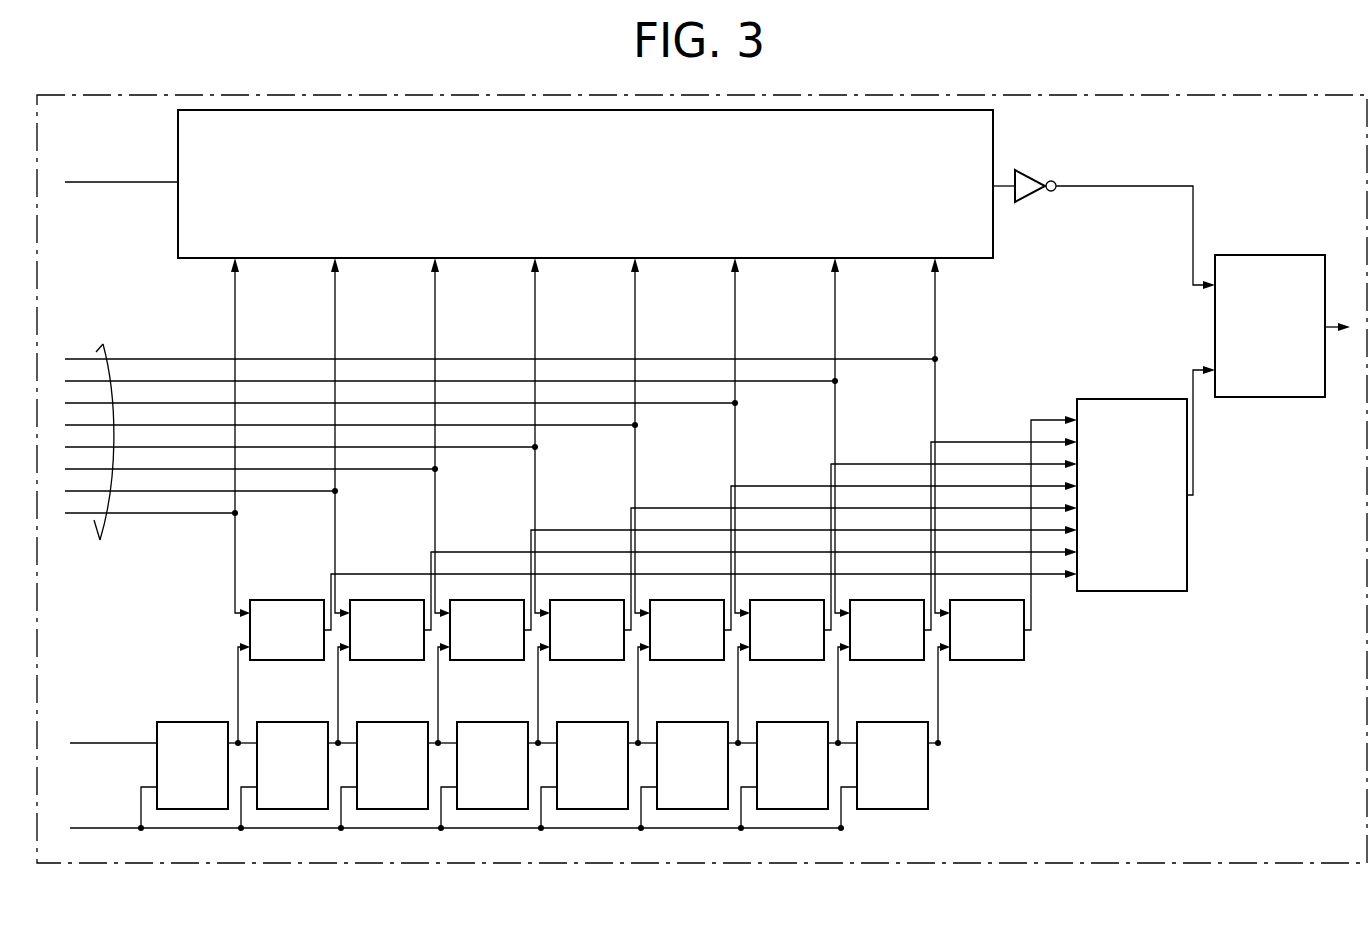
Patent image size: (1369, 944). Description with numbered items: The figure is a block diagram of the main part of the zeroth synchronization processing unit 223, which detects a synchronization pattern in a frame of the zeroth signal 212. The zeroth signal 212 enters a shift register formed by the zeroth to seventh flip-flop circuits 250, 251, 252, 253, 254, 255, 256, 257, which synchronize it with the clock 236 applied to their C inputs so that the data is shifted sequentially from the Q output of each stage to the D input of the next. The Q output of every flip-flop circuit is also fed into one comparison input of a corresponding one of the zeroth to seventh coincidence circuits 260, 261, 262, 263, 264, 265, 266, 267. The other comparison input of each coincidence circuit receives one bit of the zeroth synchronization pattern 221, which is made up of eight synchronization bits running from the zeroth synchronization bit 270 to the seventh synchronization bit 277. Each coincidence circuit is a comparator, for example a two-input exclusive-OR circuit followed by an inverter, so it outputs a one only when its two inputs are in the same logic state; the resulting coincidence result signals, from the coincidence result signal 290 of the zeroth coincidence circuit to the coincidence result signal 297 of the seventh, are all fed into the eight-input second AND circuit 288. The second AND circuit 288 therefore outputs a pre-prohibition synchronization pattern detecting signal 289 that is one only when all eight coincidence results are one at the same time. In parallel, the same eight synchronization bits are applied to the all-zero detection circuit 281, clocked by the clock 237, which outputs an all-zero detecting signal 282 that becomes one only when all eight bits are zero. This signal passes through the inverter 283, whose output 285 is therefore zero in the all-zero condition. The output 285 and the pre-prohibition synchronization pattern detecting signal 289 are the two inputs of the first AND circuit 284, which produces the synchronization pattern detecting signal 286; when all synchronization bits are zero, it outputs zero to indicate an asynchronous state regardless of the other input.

The zeroth synchronization processing unit 223 is at (1215, 98).
The clock 237 is at (88, 181).
The zeroth synchronization pattern 221 is at (105, 342).
The seventh synchronization bit 277 is at (165, 358).
The zeroth synchronization bit 270 is at (158, 514).
The zeroth signal 212 is at (105, 743).
The clock 236 is at (97, 828).
The all-zero detection circuit 281 is at (993, 132).
The all-zero detecting signal 282 is at (1002, 187).
The inverter 283 is at (1033, 175).
The output of the inverter 285 is at (1139, 186).
The first AND circuit 284 is at (1290, 253).
The synchronization pattern detecting signal 286 is at (1330, 323).
The second AND circuit 288 is at (1147, 399).
The pre-prohibition synchronization pattern detecting signal 289 is at (1193, 447).
The coincidence result signal 297 is at (1043, 420).
The coincidence result signal 290 is at (1043, 576).
The zeroth flip-flop circuit 250 is at (205, 722).
The first flip-flop circuit 251 is at (268, 722).
The second flip-flop circuit 252 is at (368, 722).
The third flip-flop circuit 253 is at (468, 722).
The fourth flip-flop circuit 254 is at (568, 722).
The fifth flip-flop circuit 255 is at (668, 722).
The sixth flip-flop circuit 256 is at (768, 722).
The seventh flip-flop circuit 257 is at (868, 722).
The zeroth coincidence circuit 260 is at (268, 660).
The first coincidence circuit 261 is at (368, 660).
The second coincidence circuit 262 is at (468, 660).
The third coincidence circuit 263 is at (568, 660).
The fourth coincidence circuit 264 is at (668, 660).
The fifth coincidence circuit 265 is at (768, 660).
The sixth coincidence circuit 266 is at (868, 660).
The seventh coincidence circuit 267 is at (1010, 660).